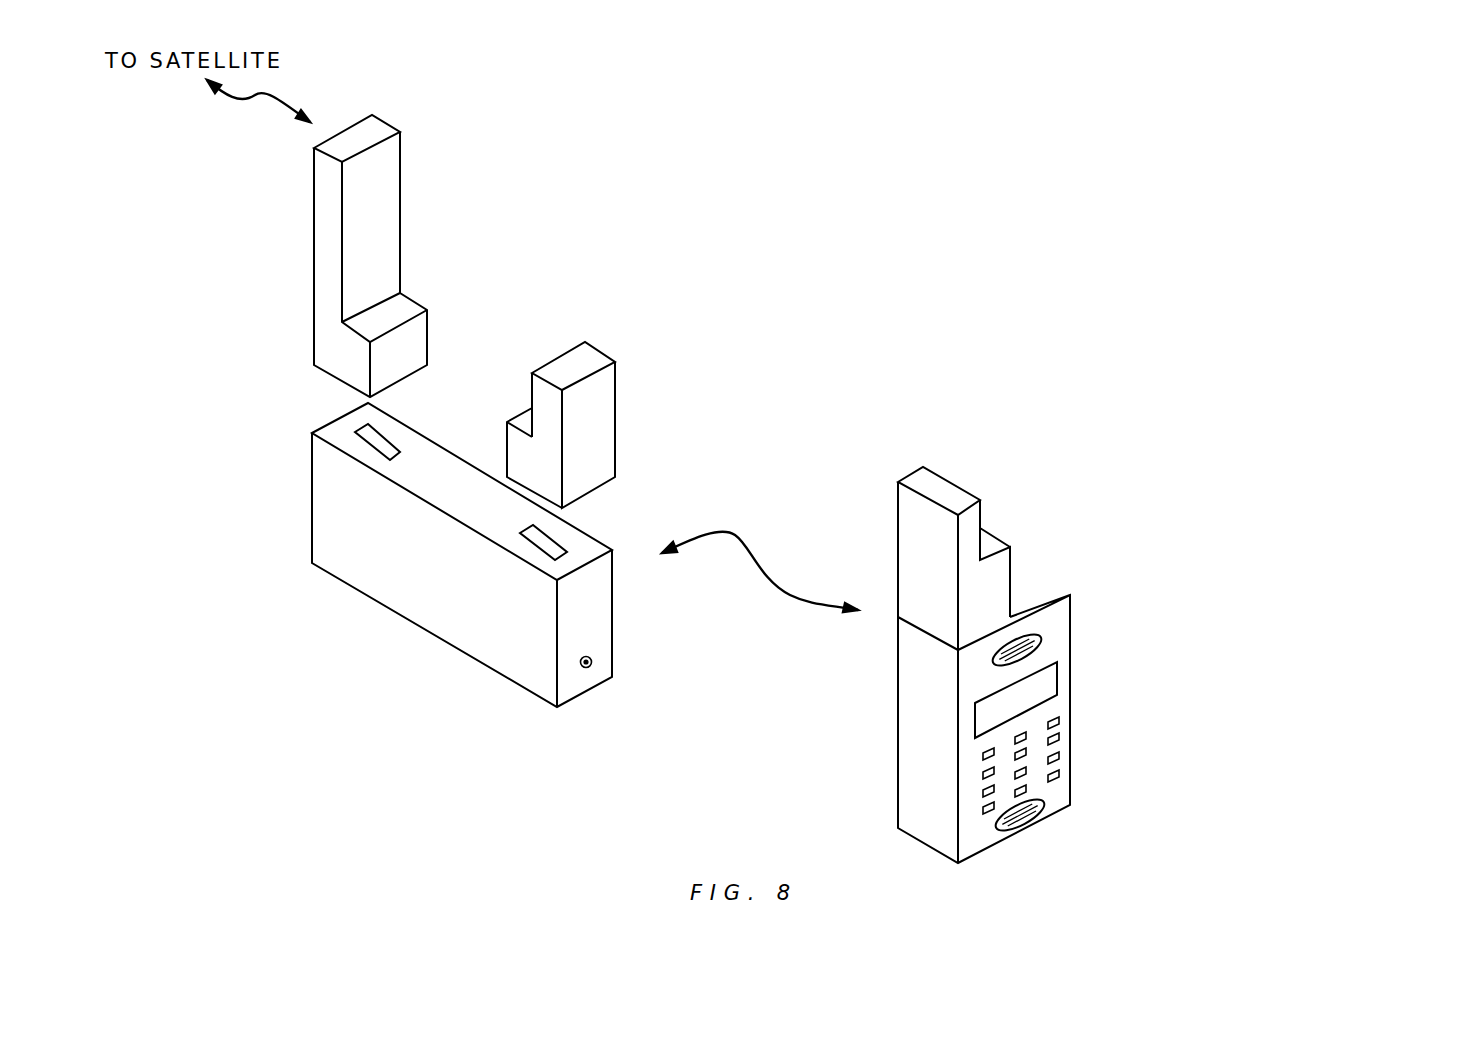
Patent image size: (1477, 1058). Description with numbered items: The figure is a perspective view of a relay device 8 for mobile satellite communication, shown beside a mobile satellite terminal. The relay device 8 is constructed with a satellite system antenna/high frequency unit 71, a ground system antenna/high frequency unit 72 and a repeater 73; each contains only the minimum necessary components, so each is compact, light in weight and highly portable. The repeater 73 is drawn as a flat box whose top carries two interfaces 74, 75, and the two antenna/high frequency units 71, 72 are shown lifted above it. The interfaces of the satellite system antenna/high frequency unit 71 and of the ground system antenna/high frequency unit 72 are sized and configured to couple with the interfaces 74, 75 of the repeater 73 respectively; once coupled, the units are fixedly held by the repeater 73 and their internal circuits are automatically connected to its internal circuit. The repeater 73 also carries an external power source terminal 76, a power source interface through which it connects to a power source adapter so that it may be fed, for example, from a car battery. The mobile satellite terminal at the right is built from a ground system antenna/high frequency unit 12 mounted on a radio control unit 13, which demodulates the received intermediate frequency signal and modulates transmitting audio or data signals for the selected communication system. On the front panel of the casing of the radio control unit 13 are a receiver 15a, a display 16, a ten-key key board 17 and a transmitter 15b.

The relay device 8 is at (430, 690).
The satellite system antenna/high frequency unit 71 is at (377, 131).
The ground system antenna/high frequency unit 72 is at (583, 353).
The repeater 73 is at (358, 582).
The interface 74 is at (360, 433).
The interface 75 is at (553, 545).
The external power source terminal 76 is at (586, 669).
The ground system antenna/high frequency unit 12 is at (945, 480).
The radio control unit 13 is at (1066, 800).
The receiver 15a is at (1030, 645).
The transmitter 15b is at (1020, 822).
The display 16 is at (1110, 686).
The key board 17 is at (985, 775).